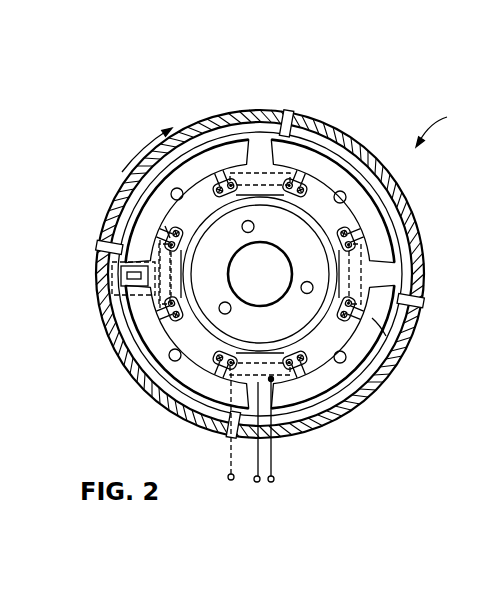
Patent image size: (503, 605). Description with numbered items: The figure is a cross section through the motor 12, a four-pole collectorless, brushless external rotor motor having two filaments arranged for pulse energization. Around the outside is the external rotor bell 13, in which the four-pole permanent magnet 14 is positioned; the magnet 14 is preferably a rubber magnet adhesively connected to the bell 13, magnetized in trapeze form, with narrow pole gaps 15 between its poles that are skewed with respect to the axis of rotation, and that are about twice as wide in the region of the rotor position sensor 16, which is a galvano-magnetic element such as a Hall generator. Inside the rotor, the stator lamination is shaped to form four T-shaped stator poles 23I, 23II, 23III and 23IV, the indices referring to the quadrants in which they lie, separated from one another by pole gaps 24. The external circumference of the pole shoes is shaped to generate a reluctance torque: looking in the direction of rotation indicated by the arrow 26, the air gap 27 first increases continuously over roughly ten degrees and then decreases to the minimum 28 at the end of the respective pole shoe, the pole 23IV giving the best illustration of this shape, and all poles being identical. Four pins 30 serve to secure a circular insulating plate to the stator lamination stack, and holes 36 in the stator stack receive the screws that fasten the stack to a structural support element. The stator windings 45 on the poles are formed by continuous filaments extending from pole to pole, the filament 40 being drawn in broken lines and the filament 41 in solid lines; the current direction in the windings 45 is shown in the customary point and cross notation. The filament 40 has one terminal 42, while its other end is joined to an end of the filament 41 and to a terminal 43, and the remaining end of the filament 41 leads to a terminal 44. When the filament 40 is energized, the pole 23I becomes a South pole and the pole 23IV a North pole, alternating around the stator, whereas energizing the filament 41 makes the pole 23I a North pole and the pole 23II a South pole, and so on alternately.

The motor 12 is at (442, 126).
The external rotor bell 13 is at (423, 247).
The four-pole permanent magnet 14 is at (422, 305).
The pole gaps 15 is at (296, 116).
The rotor position sensor 16 is at (118, 284).
The stator pole 23I is at (322, 177).
The stator pole 23II is at (160, 202).
The stator pole 23III is at (148, 333).
The stator pole 23IV is at (320, 373).
The pole gaps 24 is at (258, 143).
The arrow 26 is at (140, 147).
The air gap 27 is at (380, 327).
The minimum air gap 28 is at (280, 407).
The pins 30 is at (178, 188).
The holes 36 is at (300, 290).
The filament 40 is at (168, 283).
The filament 41 is at (166, 262).
The terminal 42 is at (230, 480).
The terminal 43 is at (272, 482).
The terminal 44 is at (257, 482).
The windings 45 is at (163, 234).